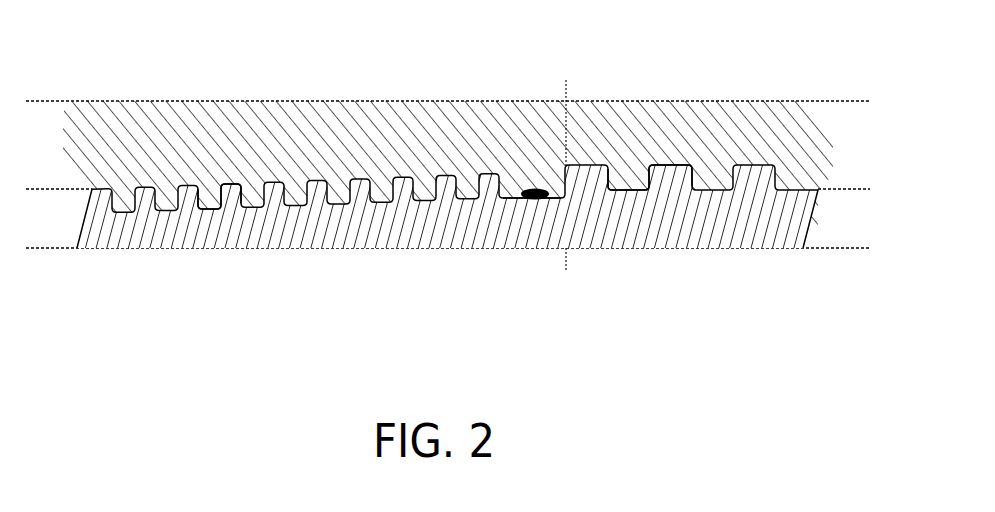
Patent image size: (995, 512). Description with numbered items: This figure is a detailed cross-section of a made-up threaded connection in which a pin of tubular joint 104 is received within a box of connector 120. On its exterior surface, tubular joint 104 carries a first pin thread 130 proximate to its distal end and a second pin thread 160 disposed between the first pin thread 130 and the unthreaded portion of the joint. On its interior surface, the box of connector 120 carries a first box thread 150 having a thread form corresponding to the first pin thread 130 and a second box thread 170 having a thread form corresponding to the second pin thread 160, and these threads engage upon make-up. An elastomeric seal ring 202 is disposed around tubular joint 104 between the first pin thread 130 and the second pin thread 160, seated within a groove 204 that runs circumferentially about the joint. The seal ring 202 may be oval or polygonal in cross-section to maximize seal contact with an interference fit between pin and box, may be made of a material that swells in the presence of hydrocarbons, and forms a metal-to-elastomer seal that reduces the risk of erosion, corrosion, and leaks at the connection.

The connector 120 is at (377, 154).
The tubular joint 104 is at (500, 233).
The first box thread 150 is at (211, 192).
The first pin thread 130 is at (232, 200).
The second box thread 170 is at (628, 175).
The second pin thread 160 is at (666, 176).
The elastomeric seal ring 202 is at (537, 188).
The groove 204 is at (528, 200).